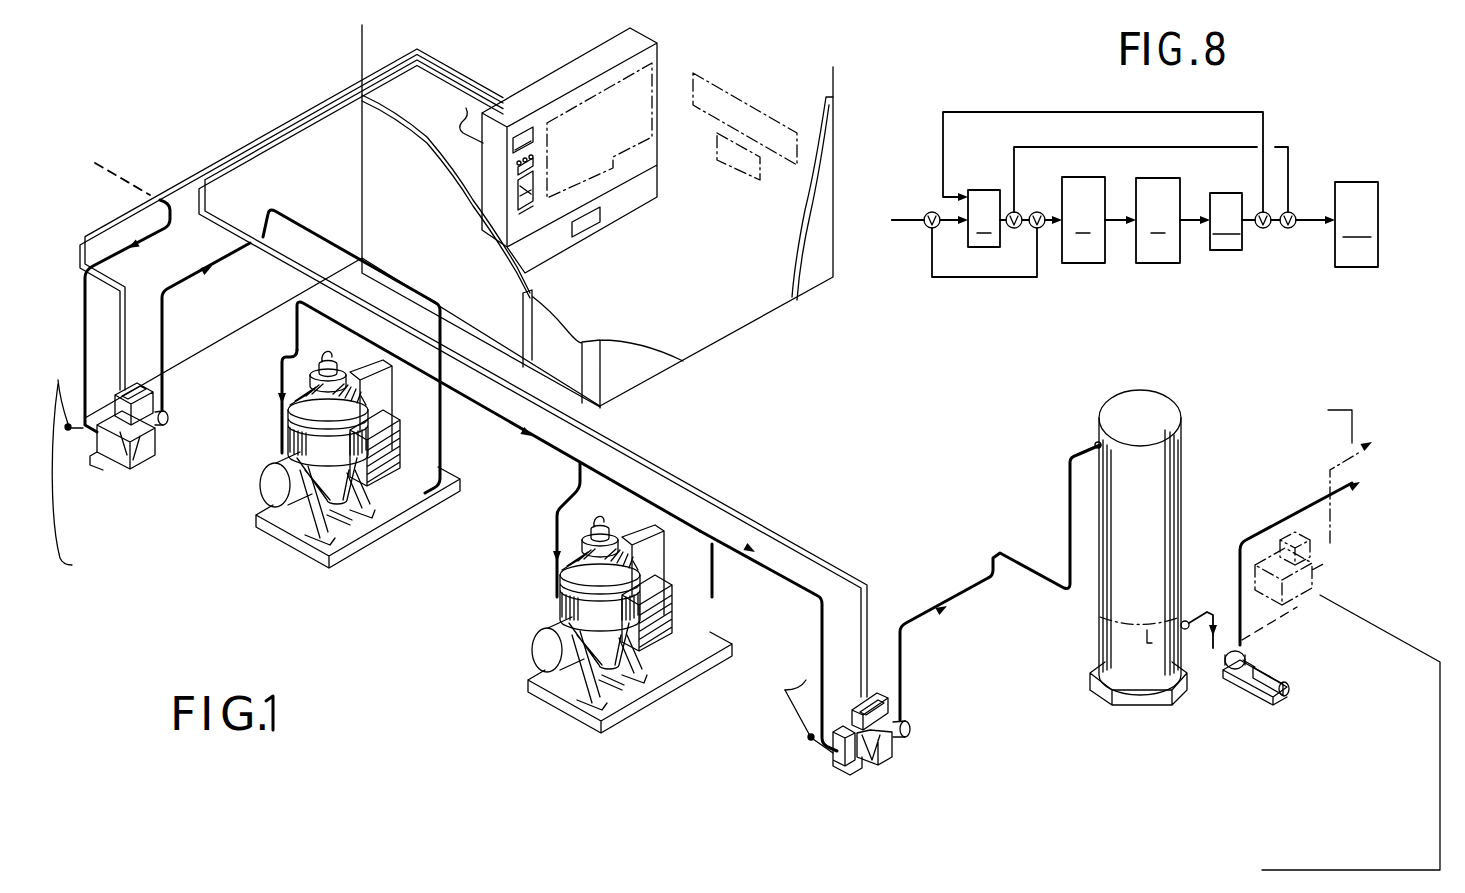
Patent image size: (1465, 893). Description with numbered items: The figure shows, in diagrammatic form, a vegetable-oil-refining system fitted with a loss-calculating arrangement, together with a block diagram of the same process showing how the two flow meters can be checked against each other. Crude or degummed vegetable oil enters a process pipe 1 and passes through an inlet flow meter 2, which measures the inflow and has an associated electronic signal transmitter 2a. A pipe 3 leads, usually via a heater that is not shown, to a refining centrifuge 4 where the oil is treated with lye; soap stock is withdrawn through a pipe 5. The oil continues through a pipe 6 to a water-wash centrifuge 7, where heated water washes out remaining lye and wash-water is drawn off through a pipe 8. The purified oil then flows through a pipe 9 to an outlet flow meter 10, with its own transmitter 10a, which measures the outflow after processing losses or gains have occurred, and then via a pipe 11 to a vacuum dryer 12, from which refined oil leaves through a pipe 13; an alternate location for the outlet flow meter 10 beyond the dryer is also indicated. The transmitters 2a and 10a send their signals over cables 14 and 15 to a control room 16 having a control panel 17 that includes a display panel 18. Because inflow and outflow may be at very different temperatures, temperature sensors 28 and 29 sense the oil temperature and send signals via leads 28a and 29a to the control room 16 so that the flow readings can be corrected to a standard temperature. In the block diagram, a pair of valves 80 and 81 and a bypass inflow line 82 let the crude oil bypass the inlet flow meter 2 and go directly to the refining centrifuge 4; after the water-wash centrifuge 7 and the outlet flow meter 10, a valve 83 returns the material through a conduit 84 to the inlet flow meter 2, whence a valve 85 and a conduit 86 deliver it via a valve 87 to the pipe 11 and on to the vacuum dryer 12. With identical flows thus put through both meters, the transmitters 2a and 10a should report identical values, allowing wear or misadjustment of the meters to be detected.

In FIG. 1, the process pipe 1 is at (132, 182).
In FIG. 8, the process pipe 1 is at (914, 214).
In FIG. 1, the inlet flow meter 2 is at (162, 454).
In FIG. 8, the inlet flow meter 2 is at (984, 218).
In FIG. 1, the electronic signal transmitter 2a is at (100, 458).
In FIG. 1, the pipe 3 is at (163, 328).
In FIG. 8, the pipe 3 is at (1054, 217).
In FIG. 1, the refining centrifuge 4 is at (402, 532).
In FIG. 8, the refining centrifuge 4 is at (1083, 220).
In FIG. 1, the pipe 5 is at (278, 384).
In FIG. 1, the pipe 6 is at (506, 425).
In FIG. 8, the pipe 6 is at (1118, 218).
In FIG. 1, the water-wash centrifuge 7 is at (667, 695).
In FIG. 8, the water-wash centrifuge 7 is at (1158, 220).
In FIG. 1, the pipe 8 is at (515, 530).
In FIG. 1, the pipe 9 is at (798, 588).
In FIG. 8, the pipe 9 is at (1193, 218).
In FIG. 1, the outlet flow meter 10 is at (908, 747).
In FIG. 8, the outlet flow meter 10 is at (1226, 221).
In FIG. 1, the electronic signal transmitter 10a is at (833, 760).
In FIG. 1, the pipe 11 is at (965, 598).
In FIG. 8, the pipe 11 is at (1320, 218).
In FIG. 1, the vacuum dryer 12 is at (1074, 653).
In FIG. 8, the vacuum dryer 12 is at (1356, 224).
In FIG. 1, the pipe 13 is at (1312, 500).
In FIG. 1, the cable 14 is at (222, 153).
In FIG. 1, the cable 15 is at (227, 195).
In FIG. 1, the control room 16 is at (762, 324).
In FIG. 1, the control panel 17 is at (651, 94).
In FIG. 1, the panel 18 is at (527, 103).
In FIG. 1, the temperature sensor 28 is at (70, 424).
In FIG. 1, the lead 28a is at (474, 100).
In FIG. 1, the temperature sensor 29 is at (806, 737).
In FIG. 1, the lead 29a is at (462, 126).
In FIG. 8, the valve 80 is at (925, 228).
In FIG. 8, the valve 81 is at (1040, 230).
In FIG. 8, the bypass inflow line 82 is at (990, 278).
In FIG. 8, the valve 83 is at (1265, 230).
In FIG. 8, the conduit 84 is at (1225, 94).
In FIG. 8, the valve 85 is at (1012, 208).
In FIG. 8, the conduit 86 is at (1102, 147).
In FIG. 8, the valve 87 is at (1289, 230).